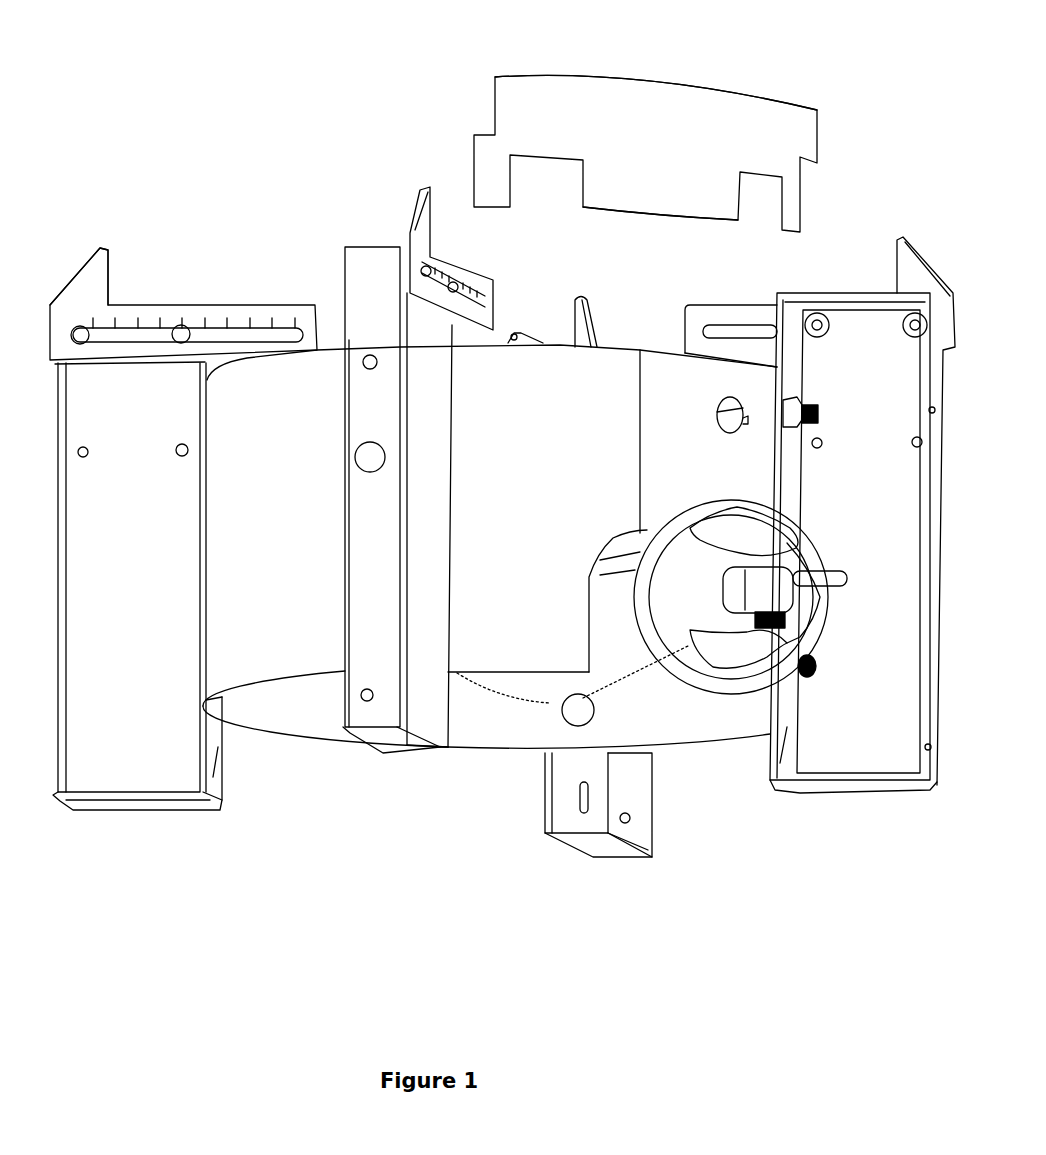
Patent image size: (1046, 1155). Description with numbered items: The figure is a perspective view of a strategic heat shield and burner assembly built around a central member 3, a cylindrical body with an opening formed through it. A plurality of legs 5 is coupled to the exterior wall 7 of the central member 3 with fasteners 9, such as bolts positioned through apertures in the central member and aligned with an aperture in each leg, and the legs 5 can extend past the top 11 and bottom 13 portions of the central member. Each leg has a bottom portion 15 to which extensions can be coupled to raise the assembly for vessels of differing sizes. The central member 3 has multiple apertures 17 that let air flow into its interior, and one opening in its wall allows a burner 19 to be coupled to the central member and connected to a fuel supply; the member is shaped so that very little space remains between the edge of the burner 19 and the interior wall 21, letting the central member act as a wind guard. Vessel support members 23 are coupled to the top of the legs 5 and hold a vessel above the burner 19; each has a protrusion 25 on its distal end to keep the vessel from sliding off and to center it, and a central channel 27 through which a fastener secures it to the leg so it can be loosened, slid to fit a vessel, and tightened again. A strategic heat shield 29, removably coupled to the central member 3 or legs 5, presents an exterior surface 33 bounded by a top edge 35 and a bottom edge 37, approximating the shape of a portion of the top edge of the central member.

The central member 3 is at (439, 470).
The legs 5 is at (137, 638).
The exterior wall 7 is at (450, 830).
The fasteners 9 is at (798, 566).
The top portion 11 is at (615, 345).
The bottom portion 13 is at (573, 677).
The bottom portion of leg 15 is at (155, 807).
The apertures 17 is at (737, 405).
The burner 19 is at (520, 690).
The interior wall 21 is at (310, 717).
The vessel support members 23 is at (178, 261).
The protrusion 25 is at (95, 270).
The central channel 27 is at (213, 335).
The strategic heat shield 29 is at (666, 137).
The exterior surface 33 is at (645, 153).
The top edge 35 is at (660, 80).
The bottom edge 37 is at (668, 212).